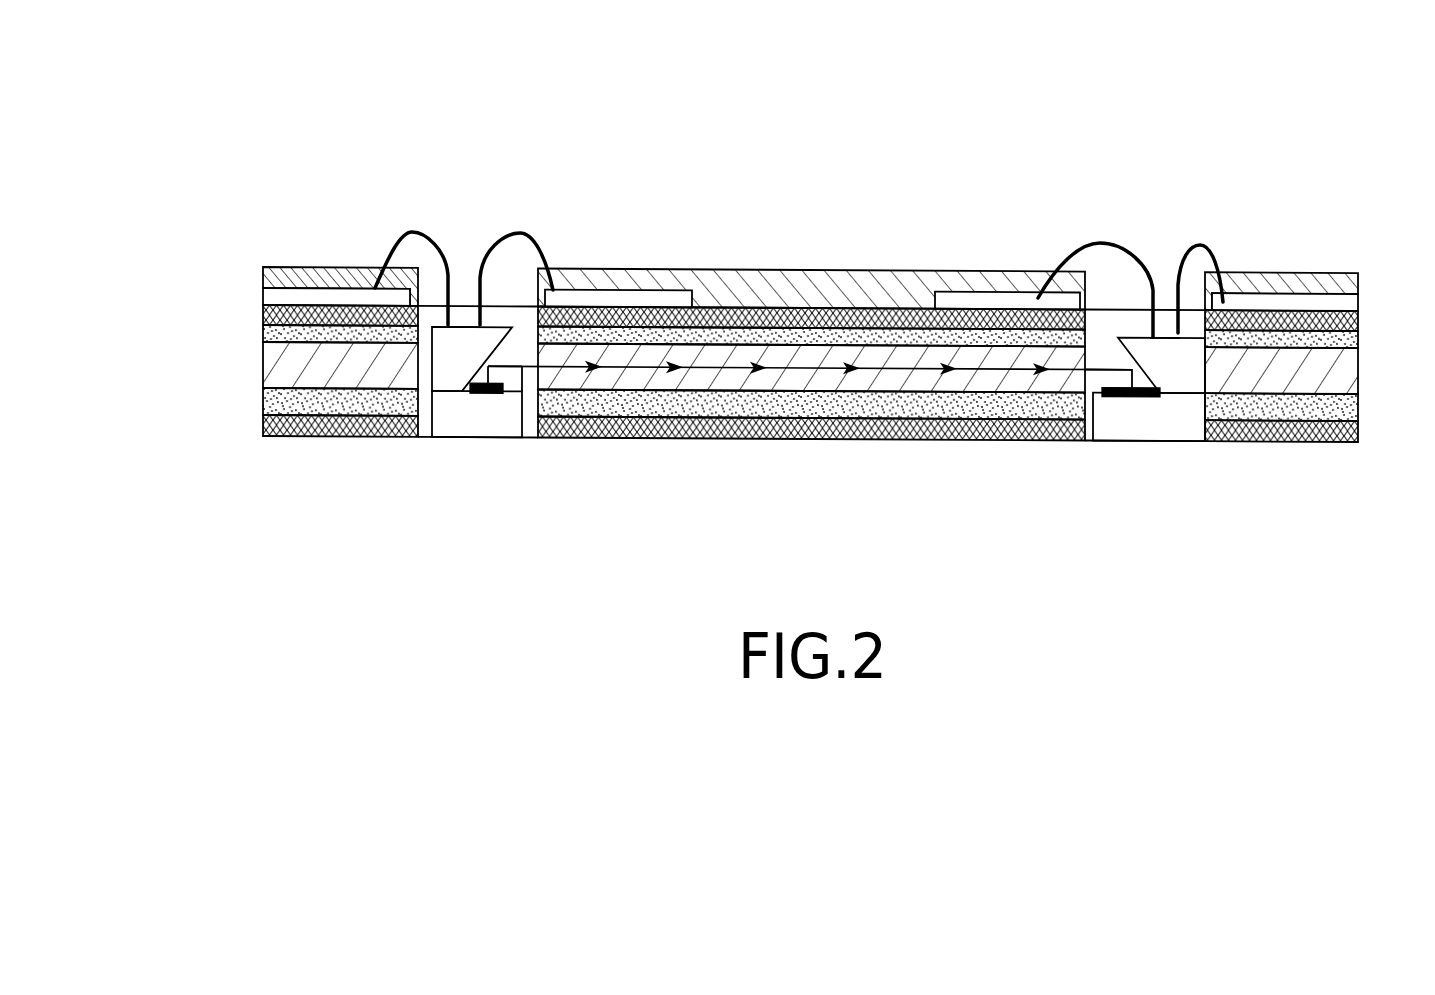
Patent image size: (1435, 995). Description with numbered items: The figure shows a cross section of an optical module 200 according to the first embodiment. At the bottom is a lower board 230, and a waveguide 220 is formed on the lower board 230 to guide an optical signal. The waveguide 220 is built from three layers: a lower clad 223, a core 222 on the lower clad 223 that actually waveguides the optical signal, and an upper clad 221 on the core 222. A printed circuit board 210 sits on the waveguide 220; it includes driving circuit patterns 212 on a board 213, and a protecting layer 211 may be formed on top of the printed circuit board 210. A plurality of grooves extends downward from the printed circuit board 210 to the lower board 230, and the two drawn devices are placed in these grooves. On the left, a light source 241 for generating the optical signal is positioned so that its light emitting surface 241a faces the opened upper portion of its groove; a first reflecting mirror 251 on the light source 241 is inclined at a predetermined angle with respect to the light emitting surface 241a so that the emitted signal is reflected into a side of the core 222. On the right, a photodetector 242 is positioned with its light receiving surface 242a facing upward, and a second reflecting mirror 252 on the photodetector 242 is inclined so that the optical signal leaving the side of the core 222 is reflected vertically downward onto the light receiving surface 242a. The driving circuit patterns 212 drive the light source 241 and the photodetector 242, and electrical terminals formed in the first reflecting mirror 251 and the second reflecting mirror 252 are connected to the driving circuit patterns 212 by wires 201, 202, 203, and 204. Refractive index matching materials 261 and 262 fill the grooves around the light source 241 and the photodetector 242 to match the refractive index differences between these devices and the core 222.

The optical module 200 is at (758, 69).
The wire 201 is at (400, 230).
The wire 202 is at (517, 228).
The wire 203 is at (1100, 240).
The wire 204 is at (1197, 243).
The printed circuit board 210 is at (759, 306).
The protecting layer 211 is at (262, 273).
The driving circuit patterns 212 is at (262, 297).
The board 213 is at (262, 317).
The waveguide 220 is at (774, 388).
The upper clad 221 is at (262, 337).
The core 222 is at (262, 365).
The lower clad 223 is at (262, 403).
The lower board 230 is at (262, 425).
The light source 241 is at (450, 422).
The light emitting surface 241a is at (488, 395).
The photodetector 242 is at (1192, 423).
The light receiving surface 242a is at (1112, 398).
The first reflecting mirror 251 is at (470, 337).
The second reflecting mirror 252 is at (1170, 348).
The refractive index matching material 261 is at (457, 312).
The refractive index matching material 262 is at (1160, 317).